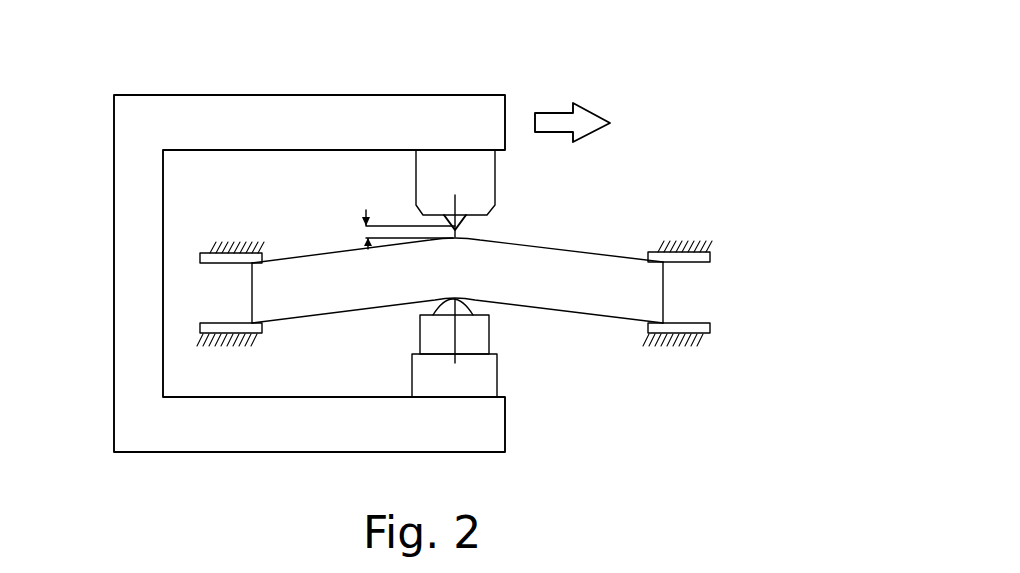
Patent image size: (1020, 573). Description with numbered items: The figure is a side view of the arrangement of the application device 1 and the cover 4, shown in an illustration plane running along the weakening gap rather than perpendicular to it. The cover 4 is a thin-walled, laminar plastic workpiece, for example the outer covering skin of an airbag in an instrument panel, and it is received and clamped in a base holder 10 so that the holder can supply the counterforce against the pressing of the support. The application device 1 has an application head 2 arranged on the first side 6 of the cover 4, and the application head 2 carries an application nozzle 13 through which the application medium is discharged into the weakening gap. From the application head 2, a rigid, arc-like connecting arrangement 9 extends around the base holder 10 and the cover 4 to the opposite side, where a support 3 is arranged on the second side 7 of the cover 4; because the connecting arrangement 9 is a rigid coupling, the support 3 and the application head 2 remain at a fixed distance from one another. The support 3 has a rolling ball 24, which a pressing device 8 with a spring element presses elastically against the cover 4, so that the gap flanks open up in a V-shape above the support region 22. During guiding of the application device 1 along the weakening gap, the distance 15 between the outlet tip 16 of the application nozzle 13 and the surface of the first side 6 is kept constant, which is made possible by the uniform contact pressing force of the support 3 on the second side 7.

The application device 1 is at (323, 235).
The application head 2 is at (494, 198).
The support 3 is at (451, 348).
The cover 4 is at (457, 299).
The first side 6 is at (300, 258).
The second side 7 is at (604, 320).
The pressing device 8 is at (432, 335).
The connecting arrangement 9 is at (128, 261).
The base holder 10 is at (215, 328).
The application nozzle 13 is at (466, 219).
The distance 15 is at (366, 212).
The outlet tip 16 is at (453, 233).
The support region 22 is at (430, 303).
The rolling ball 24 is at (462, 307).